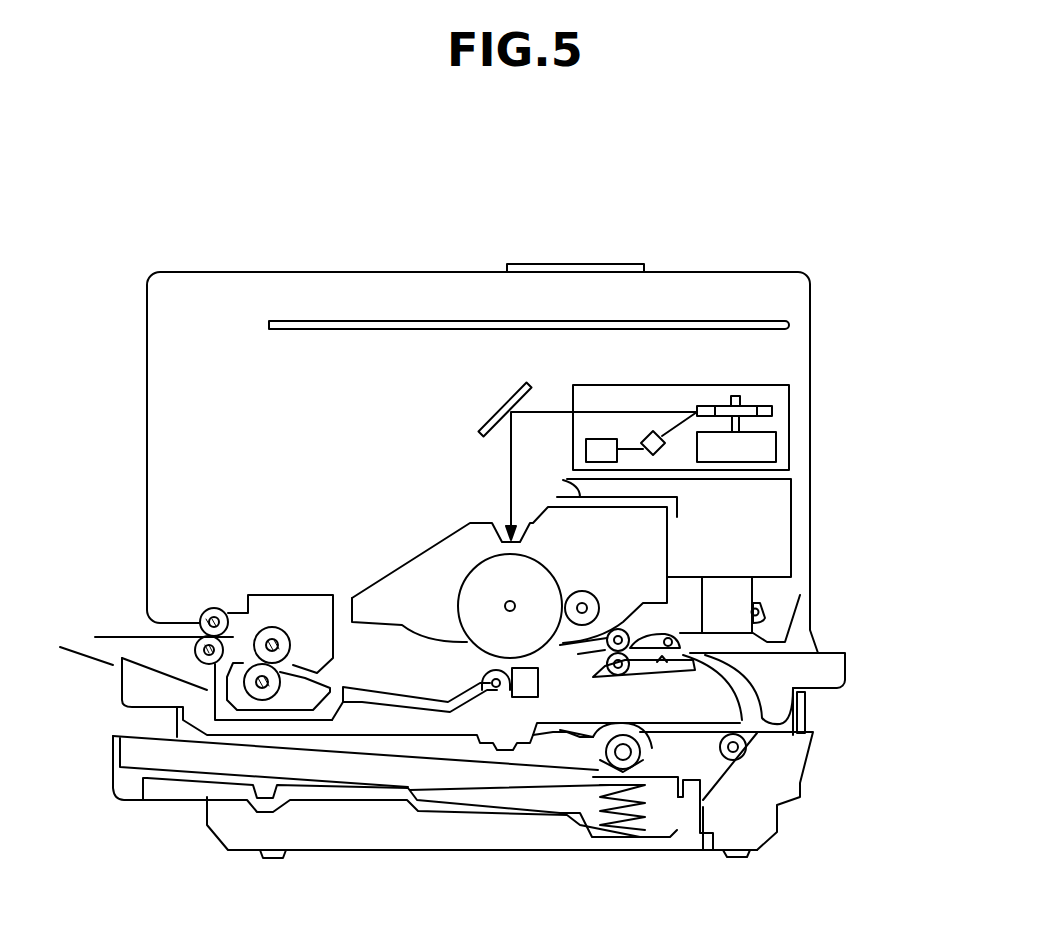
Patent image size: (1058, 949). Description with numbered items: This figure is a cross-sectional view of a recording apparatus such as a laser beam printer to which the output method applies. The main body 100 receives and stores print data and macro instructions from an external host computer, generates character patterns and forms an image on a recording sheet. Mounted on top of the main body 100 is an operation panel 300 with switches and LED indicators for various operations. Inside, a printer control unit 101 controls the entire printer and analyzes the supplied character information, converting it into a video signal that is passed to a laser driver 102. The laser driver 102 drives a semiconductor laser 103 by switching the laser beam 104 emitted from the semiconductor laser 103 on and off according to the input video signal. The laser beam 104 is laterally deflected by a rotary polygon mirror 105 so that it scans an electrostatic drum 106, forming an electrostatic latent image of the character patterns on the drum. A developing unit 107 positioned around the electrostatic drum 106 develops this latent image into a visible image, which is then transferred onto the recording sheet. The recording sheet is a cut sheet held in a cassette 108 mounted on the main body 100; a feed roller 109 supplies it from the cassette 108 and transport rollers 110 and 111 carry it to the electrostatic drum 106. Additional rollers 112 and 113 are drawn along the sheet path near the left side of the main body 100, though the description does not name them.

The main body 100 is at (748, 270).
The printer control unit 101 is at (787, 325).
The laser driver 102 is at (586, 450).
The semiconductor laser 103 is at (661, 445).
The laser beam 104 is at (673, 407).
The rotary polygon mirror 105 is at (772, 409).
The electrostatic drum 106 is at (477, 573).
The developing unit 107 is at (392, 595).
The cassette 108 is at (113, 762).
The feed roller 109 is at (602, 762).
The transport roller 110 is at (737, 752).
The transport roller 111 is at (622, 674).
The fixing roller pair 112 is at (277, 626).
The discharge roller pair 113 is at (213, 607).
The operation panel 300 is at (601, 263).